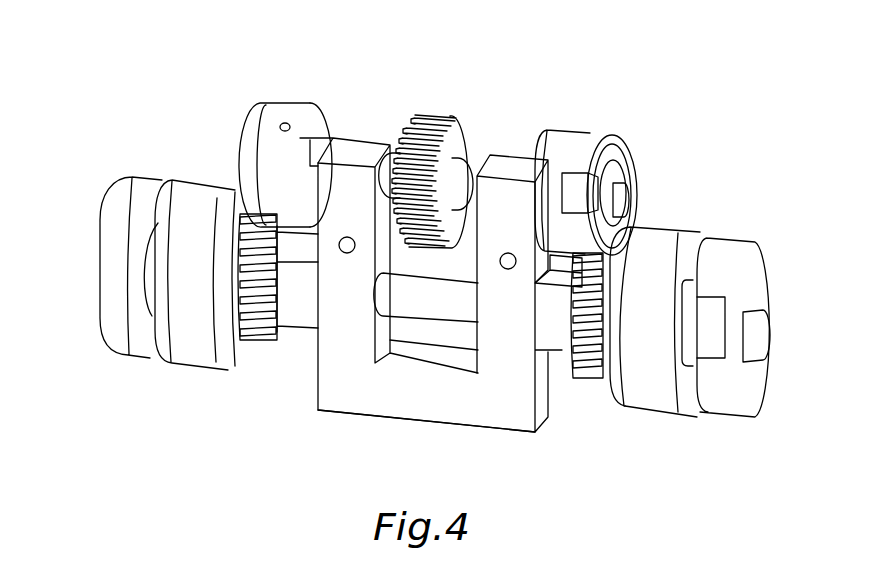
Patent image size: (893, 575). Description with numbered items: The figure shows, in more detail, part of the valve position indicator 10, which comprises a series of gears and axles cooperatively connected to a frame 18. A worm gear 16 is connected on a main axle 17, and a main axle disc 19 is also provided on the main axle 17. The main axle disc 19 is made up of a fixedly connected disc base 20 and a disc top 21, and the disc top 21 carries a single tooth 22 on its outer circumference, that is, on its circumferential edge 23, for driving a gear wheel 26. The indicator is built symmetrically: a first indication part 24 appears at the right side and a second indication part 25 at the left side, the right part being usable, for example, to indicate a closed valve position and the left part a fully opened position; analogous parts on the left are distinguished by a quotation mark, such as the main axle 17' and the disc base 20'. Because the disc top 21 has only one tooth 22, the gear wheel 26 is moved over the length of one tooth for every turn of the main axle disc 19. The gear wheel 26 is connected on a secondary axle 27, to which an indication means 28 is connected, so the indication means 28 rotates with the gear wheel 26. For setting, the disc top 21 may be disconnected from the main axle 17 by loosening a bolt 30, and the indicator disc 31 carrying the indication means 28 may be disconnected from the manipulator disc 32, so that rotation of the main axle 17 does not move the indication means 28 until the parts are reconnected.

The valve position indicator 10 is at (114, 129).
The worm gear 16 is at (432, 127).
The main axle 17 is at (496, 124).
The main axle 17' is at (394, 112).
The frame 18 is at (447, 397).
The main axle disc 19 is at (628, 97).
The disc base 20 is at (566, 166).
The disc base 20' is at (306, 121).
The disc top 21 is at (625, 142).
The tooth 22 is at (593, 192).
The circumferential edge 23 is at (247, 107).
The first indication part 24 is at (740, 475).
The second indication part 25 is at (317, 417).
The gear wheel 26 is at (583, 385).
The secondary axle 27 is at (430, 297).
The indication means 28 is at (713, 343).
The bolt 30 is at (632, 198).
The indicator disc 31 is at (752, 275).
The manipulator disc 32 is at (648, 385).